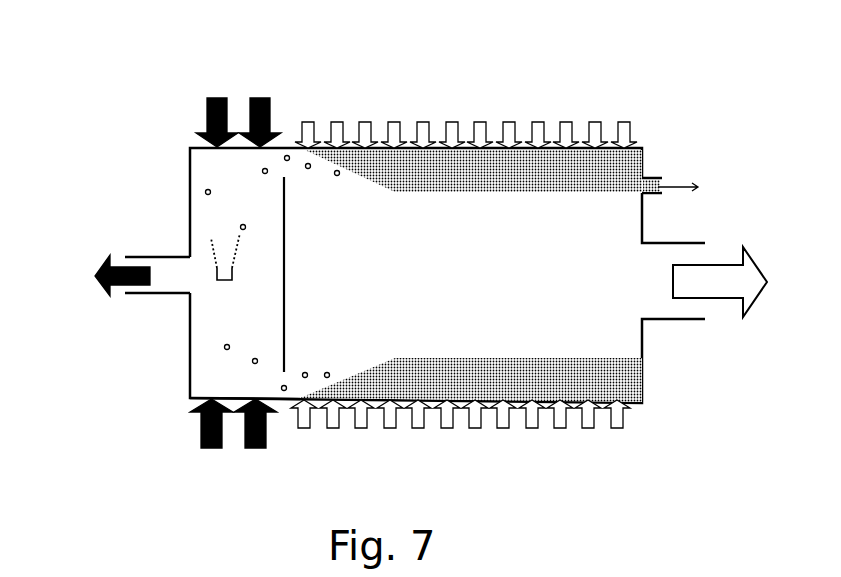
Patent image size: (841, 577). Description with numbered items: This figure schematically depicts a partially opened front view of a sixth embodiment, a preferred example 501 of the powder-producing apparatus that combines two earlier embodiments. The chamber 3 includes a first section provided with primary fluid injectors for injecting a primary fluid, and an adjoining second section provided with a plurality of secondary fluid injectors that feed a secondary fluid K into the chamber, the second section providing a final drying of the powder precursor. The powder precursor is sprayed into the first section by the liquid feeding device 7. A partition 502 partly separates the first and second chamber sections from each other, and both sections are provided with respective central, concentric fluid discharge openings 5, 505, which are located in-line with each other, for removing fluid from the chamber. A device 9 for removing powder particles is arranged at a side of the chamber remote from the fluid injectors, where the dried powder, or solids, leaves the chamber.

The apparatus 501 is at (170, 143).
The fluid discharge opening 505 is at (155, 257).
The liquid feeding device 7 is at (213, 279).
The partition 502 is at (293, 295).
The chamber 3 is at (186, 414).
The device for removing powder particles 9 is at (245, 93).
The secondary fluid k is at (565, 108).
The fluid discharge opening 5 is at (678, 319).